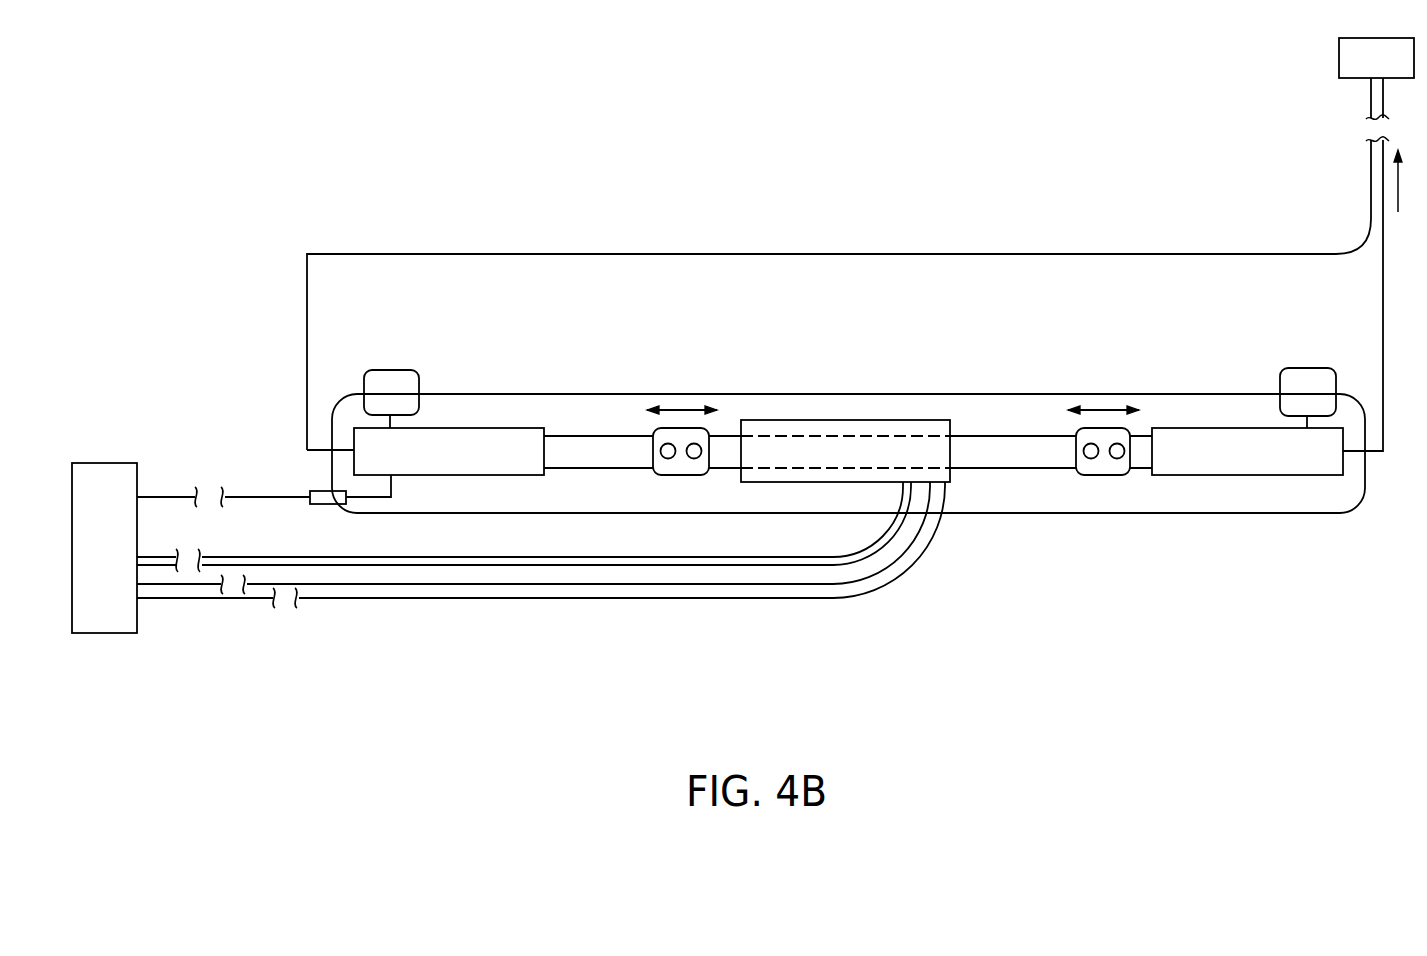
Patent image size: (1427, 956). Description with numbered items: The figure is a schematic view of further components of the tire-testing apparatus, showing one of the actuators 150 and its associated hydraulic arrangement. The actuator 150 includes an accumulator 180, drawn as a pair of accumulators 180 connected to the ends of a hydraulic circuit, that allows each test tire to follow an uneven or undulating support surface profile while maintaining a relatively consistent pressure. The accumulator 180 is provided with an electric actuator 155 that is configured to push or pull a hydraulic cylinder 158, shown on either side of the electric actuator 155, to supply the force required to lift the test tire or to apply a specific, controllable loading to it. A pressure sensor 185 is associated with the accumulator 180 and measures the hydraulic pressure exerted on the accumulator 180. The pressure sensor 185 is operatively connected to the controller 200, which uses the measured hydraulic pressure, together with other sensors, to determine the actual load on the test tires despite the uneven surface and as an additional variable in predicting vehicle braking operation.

The actuator 150 is at (1376, 90).
The electric actuator 155 is at (847, 448).
The hydraulic cylinder 158 is at (510, 437).
The accumulator 180 is at (389, 377).
The pressure sensor 185 is at (318, 493).
The controller 200 is at (130, 561).